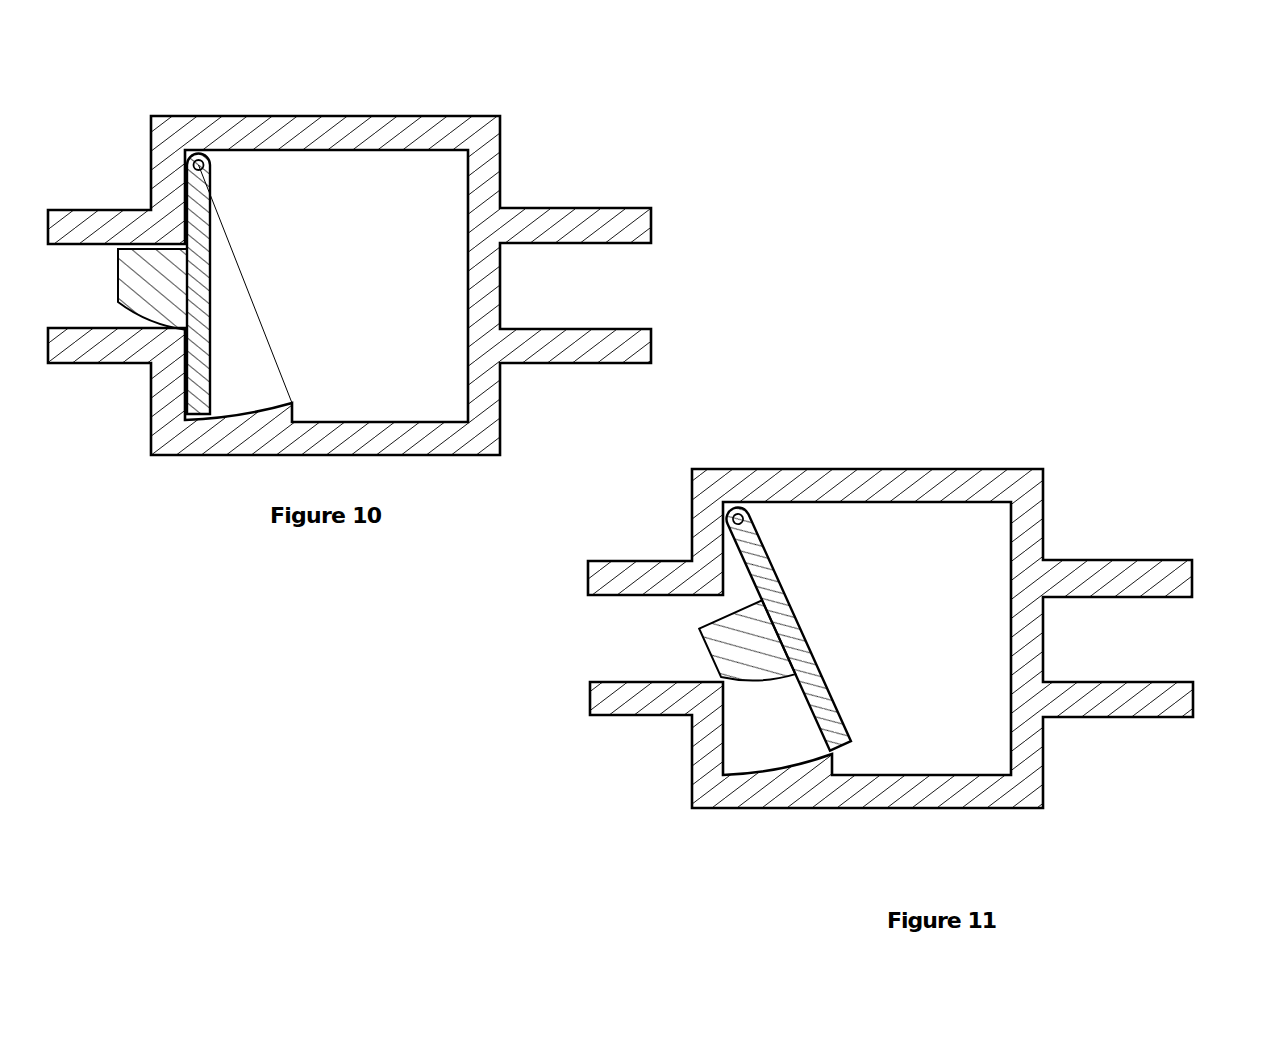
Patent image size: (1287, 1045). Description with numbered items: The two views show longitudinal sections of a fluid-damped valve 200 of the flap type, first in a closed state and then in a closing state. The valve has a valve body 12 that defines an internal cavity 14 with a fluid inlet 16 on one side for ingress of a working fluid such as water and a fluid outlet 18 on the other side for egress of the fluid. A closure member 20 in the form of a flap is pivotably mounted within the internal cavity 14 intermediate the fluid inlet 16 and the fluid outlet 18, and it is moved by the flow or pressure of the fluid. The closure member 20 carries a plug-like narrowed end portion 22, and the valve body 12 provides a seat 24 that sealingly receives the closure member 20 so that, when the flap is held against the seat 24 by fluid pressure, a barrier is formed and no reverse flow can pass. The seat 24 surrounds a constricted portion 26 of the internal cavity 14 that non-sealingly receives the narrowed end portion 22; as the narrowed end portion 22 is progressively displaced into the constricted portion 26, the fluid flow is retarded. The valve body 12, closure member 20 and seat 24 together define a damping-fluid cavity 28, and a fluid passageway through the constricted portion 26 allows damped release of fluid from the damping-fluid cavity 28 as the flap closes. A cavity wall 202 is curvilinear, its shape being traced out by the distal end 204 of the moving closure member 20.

In FIG. 10, the valve body 12 is at (152, 122).
In FIG. 11, the valve body 12 is at (702, 483).
In FIG. 10, the internal cavity 14 is at (417, 226).
In FIG. 11, the internal cavity 14 is at (962, 579).
In FIG. 10, the fluid inlet 16 is at (75, 294).
In FIG. 11, the fluid inlet 16 is at (622, 647).
In FIG. 10, the fluid outlet 18 is at (633, 296).
In FIG. 11, the fluid outlet 18 is at (1182, 651).
In FIG. 10, the closure member 20 is at (186, 289).
In FIG. 11, the closure member 20 is at (774, 659).
In FIG. 10, the narrowed end portion 22 is at (143, 303).
In FIG. 11, the seat 24 is at (725, 757).
In FIG. 11, the constricted portion 26 is at (664, 738).
In FIG. 11, the damping-fluid cavity 28 is at (784, 729).
In FIG. 10, the fluid-damped valve 200 is at (612, 101).
In FIG. 11, the fluid-damped valve 200 is at (1102, 416).
In FIG. 11, the cavity wall 202 is at (805, 777).
In FIG. 11, the distal end 204 is at (838, 735).